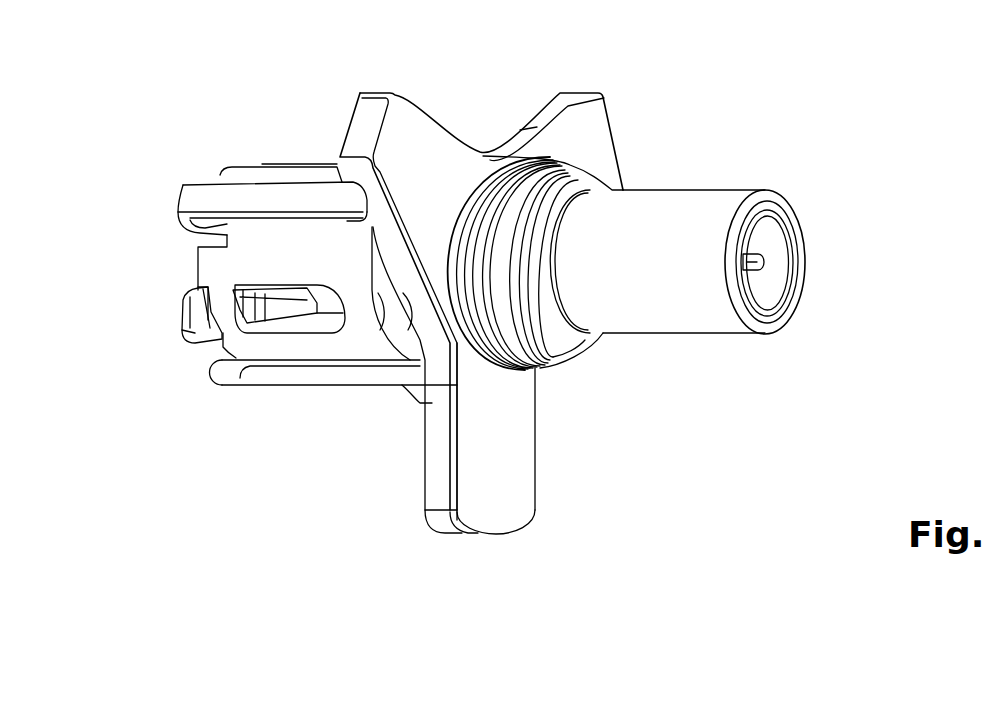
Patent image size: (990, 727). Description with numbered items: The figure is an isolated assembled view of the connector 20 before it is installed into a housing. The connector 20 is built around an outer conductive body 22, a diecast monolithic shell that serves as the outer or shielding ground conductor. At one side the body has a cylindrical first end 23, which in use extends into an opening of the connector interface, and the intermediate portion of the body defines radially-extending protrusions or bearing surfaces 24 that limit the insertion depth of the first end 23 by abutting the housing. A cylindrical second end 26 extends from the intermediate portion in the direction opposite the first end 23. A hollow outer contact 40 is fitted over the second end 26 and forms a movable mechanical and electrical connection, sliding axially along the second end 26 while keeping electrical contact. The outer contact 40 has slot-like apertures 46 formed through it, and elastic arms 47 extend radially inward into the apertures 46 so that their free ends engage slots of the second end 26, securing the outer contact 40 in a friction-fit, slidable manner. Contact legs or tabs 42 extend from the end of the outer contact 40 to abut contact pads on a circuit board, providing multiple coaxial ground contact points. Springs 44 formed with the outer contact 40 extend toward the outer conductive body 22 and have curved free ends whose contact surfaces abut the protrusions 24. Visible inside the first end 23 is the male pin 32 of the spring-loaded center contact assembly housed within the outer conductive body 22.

The connector 20 is at (459, 82).
The outer conductive body 22 is at (677, 237).
The cylindrical first end 23 is at (685, 202).
The radially-extending protrusion 24 is at (515, 468).
The cylindrical second end 26 is at (402, 341).
The male pin 32 is at (768, 262).
The outer contact 40 is at (228, 166).
The tab 42 is at (187, 323).
The spring 44 is at (397, 363).
The aperture 46 is at (310, 333).
The elastic arm 47 is at (285, 311).